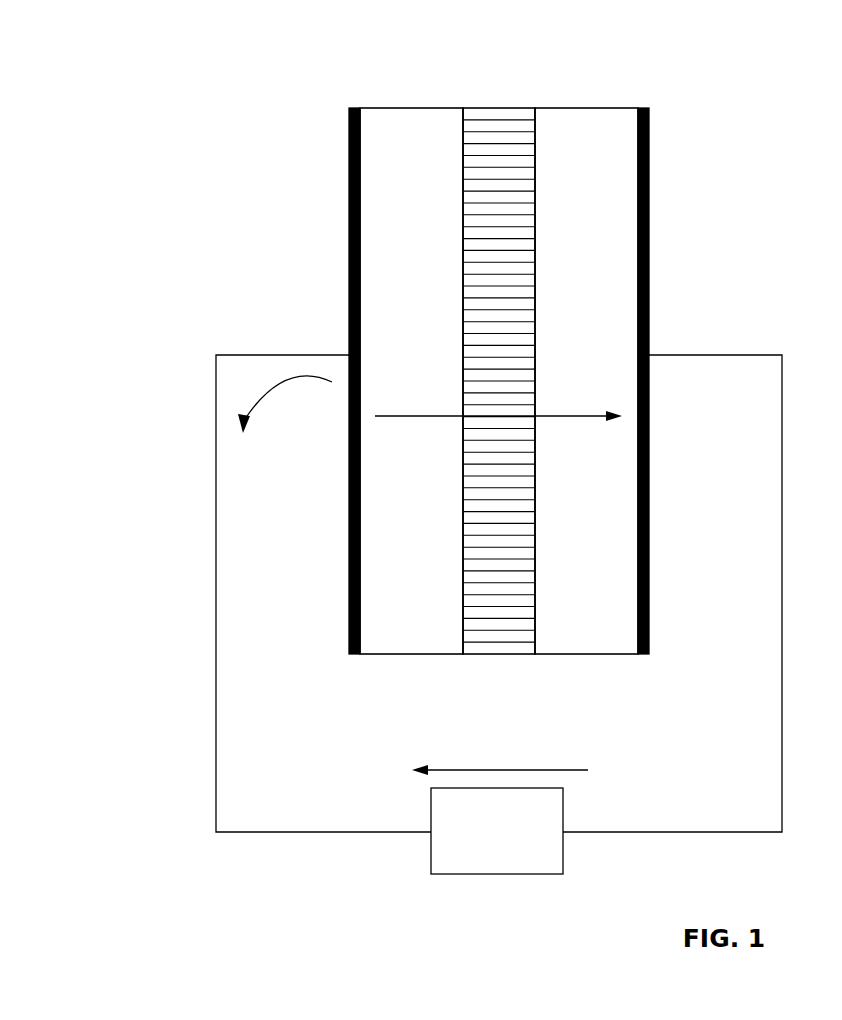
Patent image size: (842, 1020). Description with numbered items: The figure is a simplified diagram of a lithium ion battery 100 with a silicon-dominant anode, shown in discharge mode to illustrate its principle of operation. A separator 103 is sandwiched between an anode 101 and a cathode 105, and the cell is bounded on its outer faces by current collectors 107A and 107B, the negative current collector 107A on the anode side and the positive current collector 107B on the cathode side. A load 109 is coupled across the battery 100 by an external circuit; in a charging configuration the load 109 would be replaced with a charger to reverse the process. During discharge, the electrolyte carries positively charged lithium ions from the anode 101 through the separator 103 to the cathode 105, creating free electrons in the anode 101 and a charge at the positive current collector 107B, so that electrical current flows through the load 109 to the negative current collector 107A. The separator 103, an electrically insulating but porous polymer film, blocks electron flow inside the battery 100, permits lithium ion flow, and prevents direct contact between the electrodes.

The battery 100 is at (433, 451).
The anode 101 is at (411, 381).
The separator 103 is at (500, 108).
The cathode 105 is at (586, 381).
The negative current collector 107A is at (348, 127).
The positive current collector 107B is at (651, 132).
The load 109 is at (497, 831).